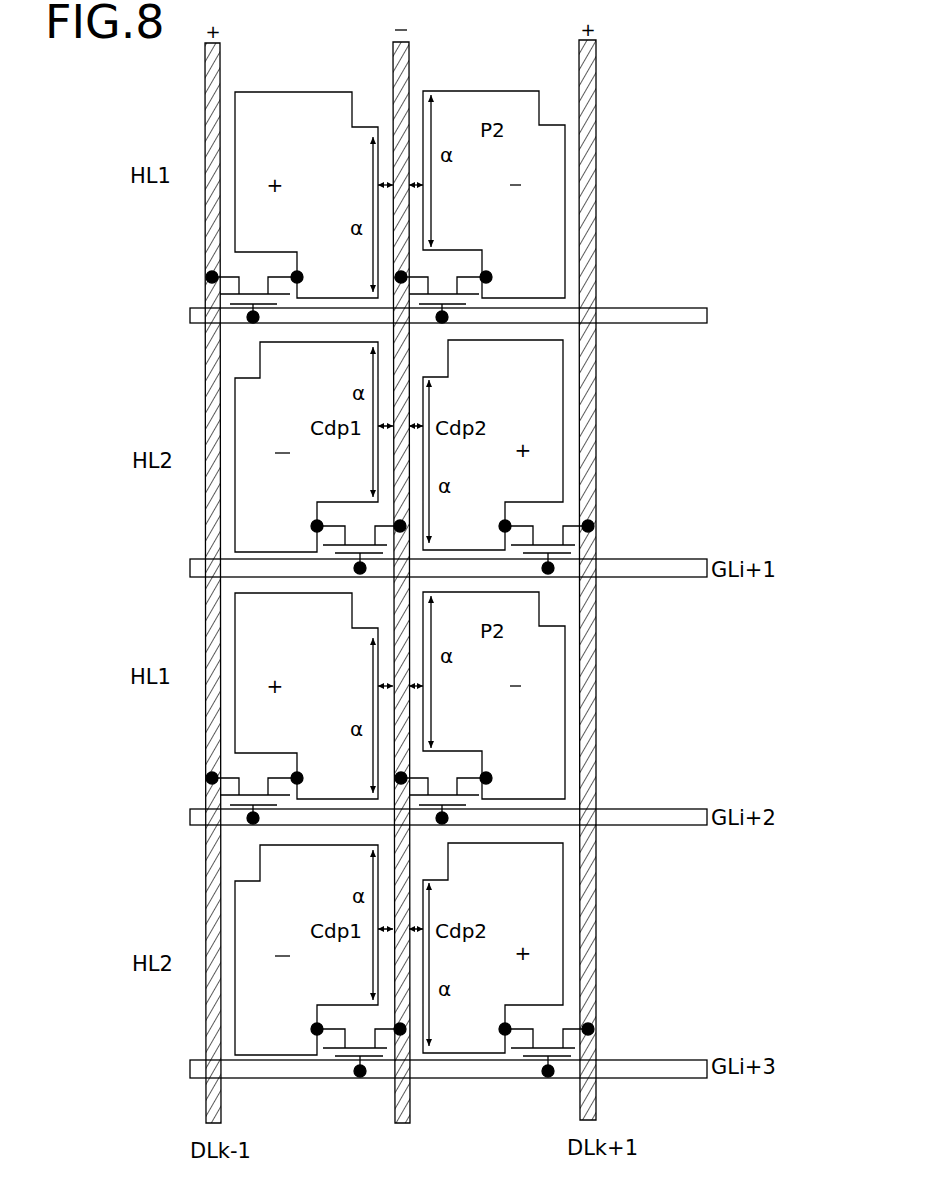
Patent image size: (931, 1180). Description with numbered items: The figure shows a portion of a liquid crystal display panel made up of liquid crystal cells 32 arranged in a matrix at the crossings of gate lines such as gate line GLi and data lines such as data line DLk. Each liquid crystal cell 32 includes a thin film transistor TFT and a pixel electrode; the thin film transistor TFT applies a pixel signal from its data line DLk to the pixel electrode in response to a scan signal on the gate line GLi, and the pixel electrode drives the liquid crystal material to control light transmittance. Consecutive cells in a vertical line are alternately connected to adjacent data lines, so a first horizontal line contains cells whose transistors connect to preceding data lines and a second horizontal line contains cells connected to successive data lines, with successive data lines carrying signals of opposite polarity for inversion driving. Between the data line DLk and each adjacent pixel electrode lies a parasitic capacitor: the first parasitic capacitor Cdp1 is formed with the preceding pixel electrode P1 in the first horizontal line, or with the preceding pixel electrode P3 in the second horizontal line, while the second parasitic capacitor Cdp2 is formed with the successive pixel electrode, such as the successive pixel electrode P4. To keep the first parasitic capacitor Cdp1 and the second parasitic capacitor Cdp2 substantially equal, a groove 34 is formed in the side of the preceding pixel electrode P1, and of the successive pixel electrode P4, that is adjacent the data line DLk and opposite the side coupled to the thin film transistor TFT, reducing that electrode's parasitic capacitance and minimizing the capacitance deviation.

The liquid crystal cell 32 is at (577, 150).
The groove 34 is at (551, 109).
The preceding pixel electrode P1 is at (306, 195).
The preceding pixel electrode P3 is at (306, 447).
The successive pixel electrode P4 is at (493, 445).
The thin film transistor TFT is at (443, 288).
The first parasitic capacitor Cdp1 is at (352, 187).
The second parasitic capacitor Cdp2 is at (449, 187).
The gate line GLi is at (467, 315).
The data line DLk is at (405, 601).